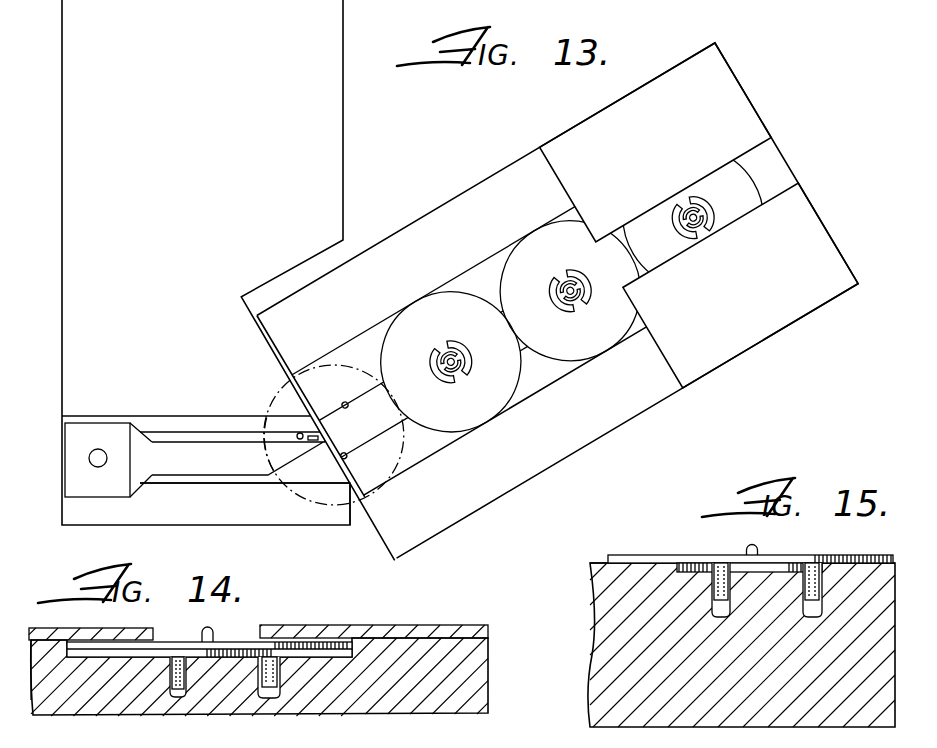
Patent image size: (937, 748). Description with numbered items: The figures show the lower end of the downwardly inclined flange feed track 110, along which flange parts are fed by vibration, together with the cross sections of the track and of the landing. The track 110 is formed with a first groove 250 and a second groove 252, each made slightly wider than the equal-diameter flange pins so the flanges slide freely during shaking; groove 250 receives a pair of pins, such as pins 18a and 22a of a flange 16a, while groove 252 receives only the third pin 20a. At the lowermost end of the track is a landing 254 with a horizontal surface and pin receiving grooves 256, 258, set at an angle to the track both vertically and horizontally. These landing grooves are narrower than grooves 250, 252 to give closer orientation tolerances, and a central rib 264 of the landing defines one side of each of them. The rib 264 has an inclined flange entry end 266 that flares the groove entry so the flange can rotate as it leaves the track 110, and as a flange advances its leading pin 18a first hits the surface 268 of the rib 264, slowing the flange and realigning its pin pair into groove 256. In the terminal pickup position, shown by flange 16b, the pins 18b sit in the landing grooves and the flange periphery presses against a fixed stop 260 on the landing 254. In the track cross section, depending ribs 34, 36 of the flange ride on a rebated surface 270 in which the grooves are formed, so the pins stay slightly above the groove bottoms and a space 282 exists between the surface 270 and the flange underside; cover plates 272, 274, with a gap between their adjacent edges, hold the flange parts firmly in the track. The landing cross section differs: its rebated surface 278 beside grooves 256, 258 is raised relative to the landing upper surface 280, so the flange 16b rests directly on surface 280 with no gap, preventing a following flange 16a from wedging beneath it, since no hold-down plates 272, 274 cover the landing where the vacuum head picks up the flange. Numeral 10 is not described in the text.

In FIG. 14, the flexible connector strip 10 is at (352, 650).
In FIG. 15, the flexible connector strip 10 is at (657, 555).
In FIG. 13, the flange 16a is at (347, 366).
In FIG. 14, the flange 16a is at (182, 640).
In FIG. 15, the flange 16b is at (830, 555).
In FIG. 13, the pin 18a is at (271, 398).
In FIG. 14, the pin 18a is at (163, 688).
In FIG. 15, the pin 18b is at (710, 587).
In FIG. 13, the pin 20a is at (352, 463).
In FIG. 14, the pin 20a is at (281, 674).
In FIG. 15, the pin 20a is at (822, 586).
In FIG. 13, the pin 22a is at (349, 403).
In FIG. 14, the depending rib 34 is at (140, 667).
In FIG. 15, the depending rib 34 is at (692, 565).
In FIG. 14, the depending rib 36 is at (243, 668).
In FIG. 13, the flange feed track 110 is at (723, 382).
In FIG. 14, the flange feed track 110 is at (413, 613).
In FIG. 13, the first groove 250 is at (386, 396).
In FIG. 14, the first groove 250 is at (188, 693).
In FIG. 13, the second groove 252 is at (407, 422).
In FIG. 14, the second groove 252 is at (281, 697).
In FIG. 13, the landing 254 is at (236, 518).
In FIG. 15, the landing 254 is at (592, 686).
In FIG. 13, the pin receiving groove 256 is at (204, 402).
In FIG. 15, the pin receiving groove 256 is at (710, 608).
In FIG. 13, the pin receiving groove 258 is at (200, 482).
In FIG. 15, the pin receiving groove 258 is at (822, 608).
In FIG. 13, the fixed stop 260 is at (147, 417).
In FIG. 13, the central rib 264 is at (235, 467).
In FIG. 15, the central rib 264 is at (783, 606).
In FIG. 13, the inclined flange entry end 266 is at (298, 485).
In FIG. 13, the surface 268 is at (320, 437).
In FIG. 13, the rebated surface 270 is at (478, 272).
In FIG. 14, the rebated surface 270 is at (90, 668).
In FIG. 13, the cover plate 272 is at (757, 134).
In FIG. 14, the cover plate 272 is at (113, 628).
In FIG. 13, the cover plate 274 is at (802, 216).
In FIG. 14, the cover plate 274 is at (298, 623).
In FIG. 13, the rebated surface 278 is at (155, 418).
In FIG. 15, the rebated surface 278 is at (677, 569).
In FIG. 15, the upper surface 280 is at (598, 562).
In FIG. 14, the space 282 is at (350, 666).